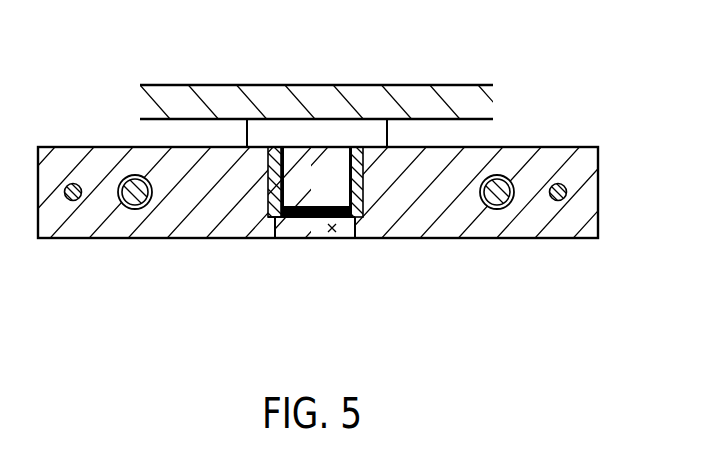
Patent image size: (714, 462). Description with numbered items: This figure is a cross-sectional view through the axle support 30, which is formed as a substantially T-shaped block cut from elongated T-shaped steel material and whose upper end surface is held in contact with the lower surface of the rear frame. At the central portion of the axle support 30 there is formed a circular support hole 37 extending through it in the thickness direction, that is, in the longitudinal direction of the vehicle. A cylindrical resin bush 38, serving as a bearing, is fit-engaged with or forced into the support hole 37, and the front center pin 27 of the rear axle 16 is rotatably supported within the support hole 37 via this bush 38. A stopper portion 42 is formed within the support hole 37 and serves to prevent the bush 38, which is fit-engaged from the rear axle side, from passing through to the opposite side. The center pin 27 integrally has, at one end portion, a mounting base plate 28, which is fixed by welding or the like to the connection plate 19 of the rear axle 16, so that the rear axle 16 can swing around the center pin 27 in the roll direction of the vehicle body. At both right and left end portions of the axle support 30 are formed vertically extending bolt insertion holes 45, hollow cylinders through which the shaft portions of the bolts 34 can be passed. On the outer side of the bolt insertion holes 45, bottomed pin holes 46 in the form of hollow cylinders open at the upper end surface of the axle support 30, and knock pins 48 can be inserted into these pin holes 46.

The rear axle 16 is at (420, 80).
The connection plate 19 is at (215, 96).
The center pin 27 is at (318, 190).
The mounting base plate 28 is at (302, 132).
The axle support 30 is at (606, 181).
The bolt 34 is at (150, 208).
The support hole 37 is at (332, 233).
The bush 38 is at (362, 190).
The stopper portion 42 is at (271, 222).
The bolt insertion hole 45 is at (135, 206).
The pin hole 46 is at (73, 202).
The knock pin 48 is at (71, 184).